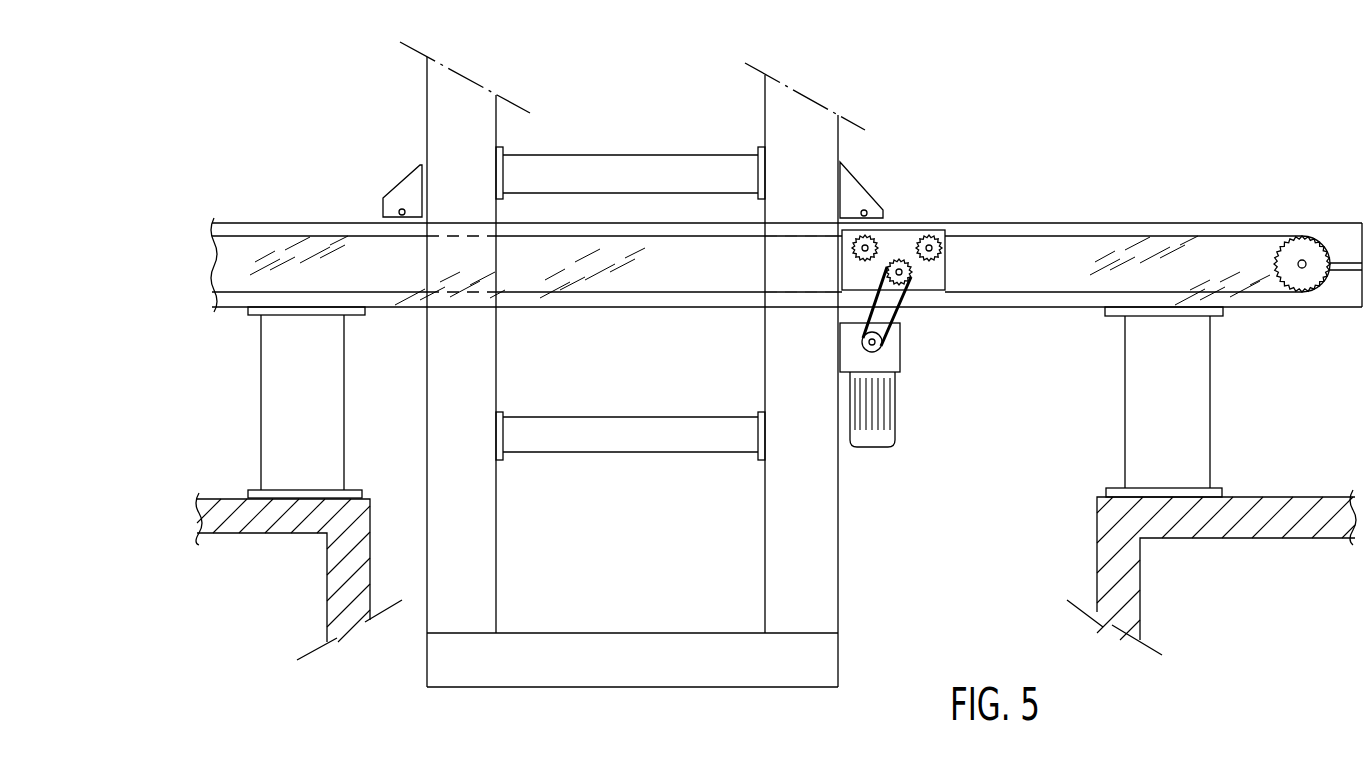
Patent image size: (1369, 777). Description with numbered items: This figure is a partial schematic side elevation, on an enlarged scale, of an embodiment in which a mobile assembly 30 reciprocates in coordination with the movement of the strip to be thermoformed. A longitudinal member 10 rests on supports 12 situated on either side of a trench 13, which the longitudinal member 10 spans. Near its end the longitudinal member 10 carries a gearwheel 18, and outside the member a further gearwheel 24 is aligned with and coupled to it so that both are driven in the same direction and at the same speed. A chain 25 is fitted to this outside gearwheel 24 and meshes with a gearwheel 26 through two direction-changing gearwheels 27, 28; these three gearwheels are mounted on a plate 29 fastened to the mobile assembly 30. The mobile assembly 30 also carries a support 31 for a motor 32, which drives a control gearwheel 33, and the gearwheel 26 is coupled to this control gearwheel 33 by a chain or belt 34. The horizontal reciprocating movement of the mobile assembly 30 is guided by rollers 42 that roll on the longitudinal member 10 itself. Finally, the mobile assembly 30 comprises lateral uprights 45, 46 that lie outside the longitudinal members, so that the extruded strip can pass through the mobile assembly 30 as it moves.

The longitudinal member 10 is at (1032, 242).
The support 12 is at (285, 405).
The trench 13 is at (1044, 567).
The gearwheel 18 is at (1333, 223).
The gearwheel 24 is at (1290, 272).
The chain 25 is at (1071, 237).
The gearwheel 26 is at (902, 265).
The direction-changing gearwheel 27 is at (944, 243).
The direction-changing gearwheel 28 is at (875, 245).
The plate 29 is at (940, 275).
The mobile assembly 30 is at (848, 532).
The support 31 is at (893, 349).
The motor 32 is at (893, 417).
The control gearwheel 33 is at (877, 350).
The chain or belt 34 is at (898, 315).
The roller 42 is at (394, 221).
The lateral upright 45 is at (446, 118).
The lateral upright 46 is at (818, 588).